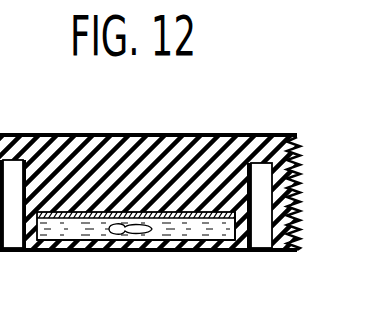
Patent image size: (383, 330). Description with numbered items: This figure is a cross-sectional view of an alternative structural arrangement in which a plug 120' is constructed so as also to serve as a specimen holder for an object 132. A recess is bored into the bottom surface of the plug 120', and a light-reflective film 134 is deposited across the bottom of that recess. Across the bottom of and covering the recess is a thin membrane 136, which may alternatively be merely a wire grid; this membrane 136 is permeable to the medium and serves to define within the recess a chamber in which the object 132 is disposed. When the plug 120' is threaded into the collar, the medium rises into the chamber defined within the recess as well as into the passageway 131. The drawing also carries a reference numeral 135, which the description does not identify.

The plug 120' is at (191, 175).
The passageway 131 is at (258, 233).
The object 132 is at (126, 234).
The light-reflective film 134 is at (67, 212).
The seal layer 135 is at (218, 233).
The thin membrane 136 is at (53, 240).